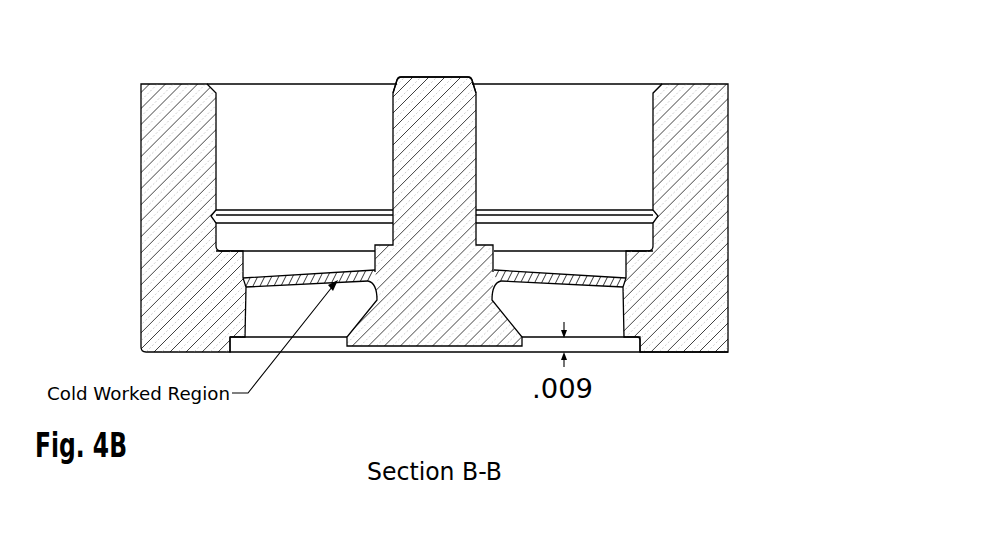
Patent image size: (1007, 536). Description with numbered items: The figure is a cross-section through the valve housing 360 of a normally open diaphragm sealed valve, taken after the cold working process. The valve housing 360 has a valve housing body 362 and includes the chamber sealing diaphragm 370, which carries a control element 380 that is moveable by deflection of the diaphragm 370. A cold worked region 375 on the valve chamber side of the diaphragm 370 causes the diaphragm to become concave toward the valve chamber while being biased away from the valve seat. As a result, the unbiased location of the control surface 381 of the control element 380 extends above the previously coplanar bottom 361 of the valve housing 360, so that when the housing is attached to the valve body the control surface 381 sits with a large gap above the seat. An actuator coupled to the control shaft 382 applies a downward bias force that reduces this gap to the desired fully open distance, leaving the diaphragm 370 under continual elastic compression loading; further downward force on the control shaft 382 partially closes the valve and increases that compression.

The valve housing 360 is at (503, 215).
The bottom of the valve housing 361 is at (685, 352).
The valve housing body 362 is at (710, 185).
The diaphragm 370 is at (438, 214).
The cold worked region 375 is at (338, 284).
The control element 380 is at (434, 208).
The control surface 381 is at (395, 345).
The control shaft 382 is at (426, 103).